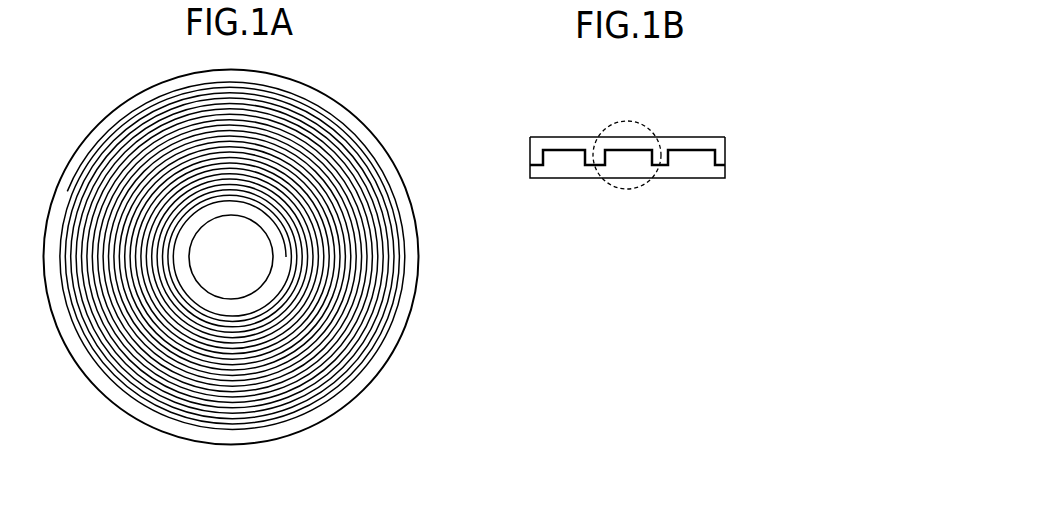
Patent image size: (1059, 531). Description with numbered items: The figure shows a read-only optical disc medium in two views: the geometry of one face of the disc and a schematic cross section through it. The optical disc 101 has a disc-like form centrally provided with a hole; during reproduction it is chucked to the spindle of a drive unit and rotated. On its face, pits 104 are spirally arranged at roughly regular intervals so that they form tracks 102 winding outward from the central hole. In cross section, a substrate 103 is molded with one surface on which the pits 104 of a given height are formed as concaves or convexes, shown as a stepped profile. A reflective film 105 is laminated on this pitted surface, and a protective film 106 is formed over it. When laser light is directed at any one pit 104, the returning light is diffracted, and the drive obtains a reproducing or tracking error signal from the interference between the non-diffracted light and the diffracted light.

In FIG. 1A, the optical disc 101 is at (400, 341).
In FIG. 1A, the tracks 102 is at (353, 390).
In FIG. 1B, the substrate 103 is at (693, 163).
In FIG. 1B, the pits 104 is at (626, 186).
In FIG. 1B, the reflective film 105 is at (563, 149).
In FIG. 1B, the protective film 106 is at (740, 108).